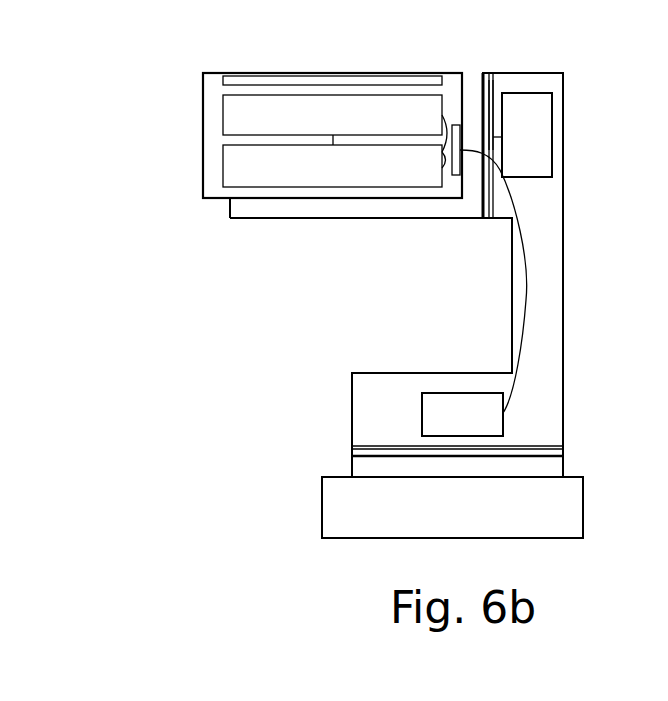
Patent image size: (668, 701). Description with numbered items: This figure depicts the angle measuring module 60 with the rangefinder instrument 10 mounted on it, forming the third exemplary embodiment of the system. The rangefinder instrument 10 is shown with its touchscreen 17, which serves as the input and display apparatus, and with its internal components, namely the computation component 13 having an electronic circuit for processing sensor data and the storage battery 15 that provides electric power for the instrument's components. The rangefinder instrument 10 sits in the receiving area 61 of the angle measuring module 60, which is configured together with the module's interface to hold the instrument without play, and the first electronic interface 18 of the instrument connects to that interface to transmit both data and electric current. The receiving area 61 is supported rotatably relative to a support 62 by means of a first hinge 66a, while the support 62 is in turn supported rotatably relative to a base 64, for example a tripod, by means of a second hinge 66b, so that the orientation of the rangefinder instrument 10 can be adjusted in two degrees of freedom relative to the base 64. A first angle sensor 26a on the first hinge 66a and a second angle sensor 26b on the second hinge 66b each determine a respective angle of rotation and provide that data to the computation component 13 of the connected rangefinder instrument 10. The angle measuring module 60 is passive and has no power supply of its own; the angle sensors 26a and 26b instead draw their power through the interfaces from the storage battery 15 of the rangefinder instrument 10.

The rangefinder instrument 10 is at (297, 116).
The computation component 13 is at (332, 115).
The storage battery 15 is at (332, 166).
The touchscreen 17 is at (252, 82).
The first electronic interface 18 is at (457, 176).
The first angle sensor 26a is at (522, 135).
The second angle sensor 26b is at (462, 414).
The angle measuring module 60 is at (393, 284).
The receiving area 61 is at (250, 208).
The support 62 is at (550, 277).
The base 64 is at (570, 485).
The first hinge 66a is at (488, 83).
The second hinge 66b is at (367, 455).